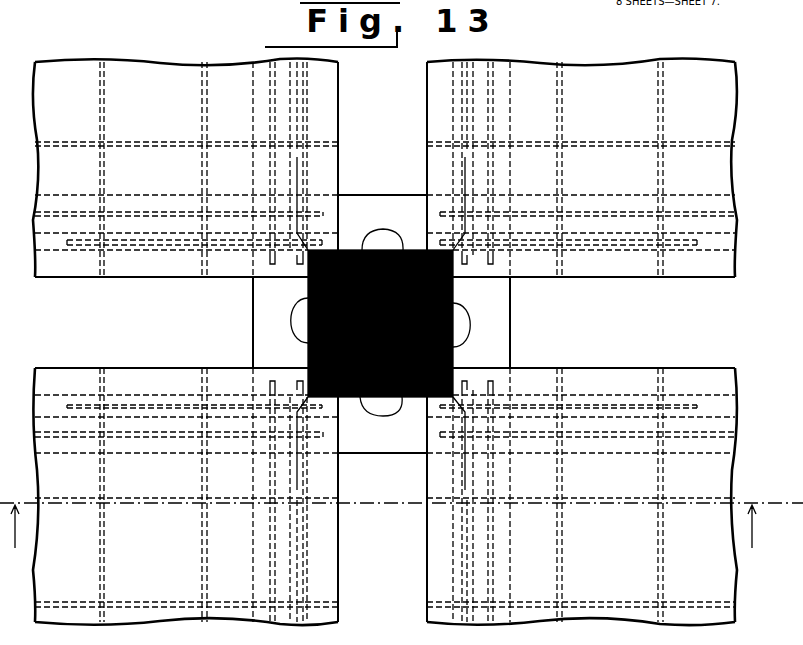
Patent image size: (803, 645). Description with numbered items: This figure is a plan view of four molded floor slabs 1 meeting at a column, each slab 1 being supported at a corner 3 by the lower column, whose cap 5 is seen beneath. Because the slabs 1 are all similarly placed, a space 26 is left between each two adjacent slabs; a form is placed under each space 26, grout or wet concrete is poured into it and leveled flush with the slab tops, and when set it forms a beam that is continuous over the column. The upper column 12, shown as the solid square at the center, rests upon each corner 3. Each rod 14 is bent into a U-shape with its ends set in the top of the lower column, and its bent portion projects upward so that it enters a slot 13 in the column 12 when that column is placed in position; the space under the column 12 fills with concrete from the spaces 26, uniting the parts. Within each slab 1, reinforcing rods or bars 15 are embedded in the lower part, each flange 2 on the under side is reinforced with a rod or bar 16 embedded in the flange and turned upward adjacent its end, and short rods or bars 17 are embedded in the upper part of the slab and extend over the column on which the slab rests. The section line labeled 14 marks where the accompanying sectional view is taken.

The slab 1 is at (385, 341).
The flange 2 is at (510, 520).
The corner 3 is at (381, 322).
The cap 5 is at (510, 318).
The column 12 is at (453, 296).
The slot 13 is at (383, 318).
The rod 14 is at (405, 397).
The reinforcing rod 15 is at (610, 600).
The rod 16 is at (493, 553).
The short rod 17 is at (465, 490).
The space 26 is at (385, 341).